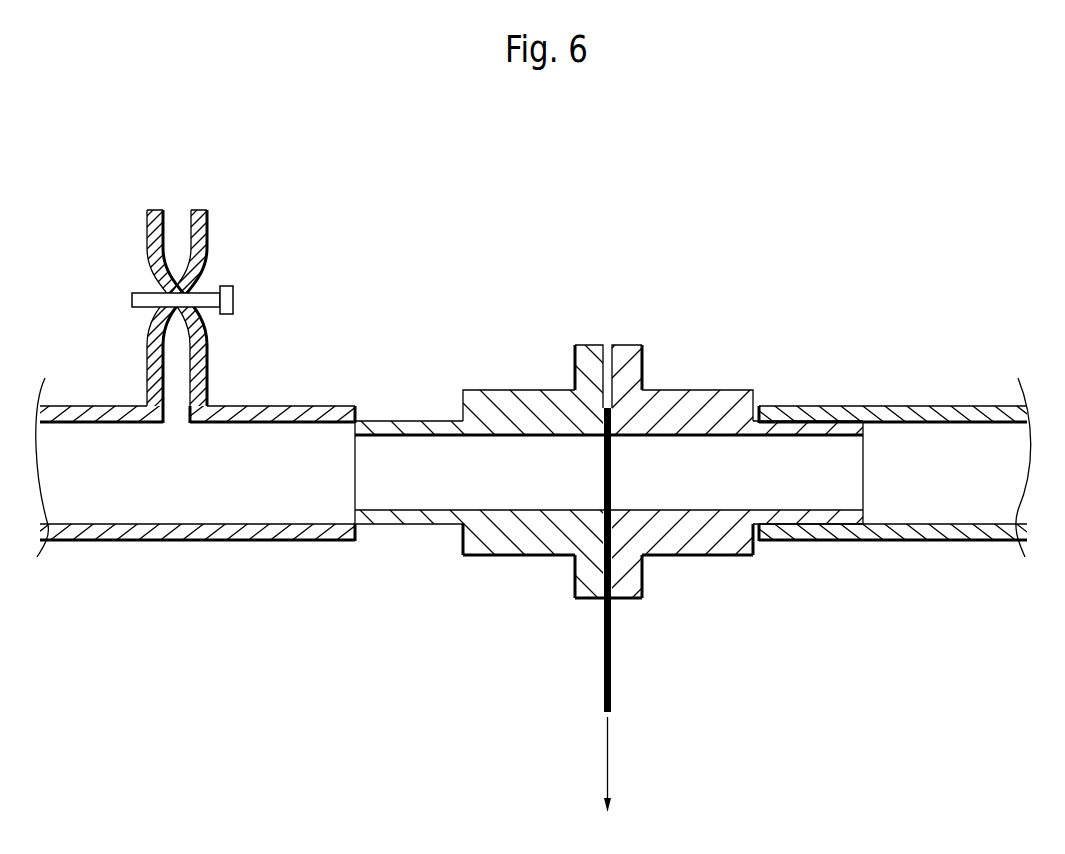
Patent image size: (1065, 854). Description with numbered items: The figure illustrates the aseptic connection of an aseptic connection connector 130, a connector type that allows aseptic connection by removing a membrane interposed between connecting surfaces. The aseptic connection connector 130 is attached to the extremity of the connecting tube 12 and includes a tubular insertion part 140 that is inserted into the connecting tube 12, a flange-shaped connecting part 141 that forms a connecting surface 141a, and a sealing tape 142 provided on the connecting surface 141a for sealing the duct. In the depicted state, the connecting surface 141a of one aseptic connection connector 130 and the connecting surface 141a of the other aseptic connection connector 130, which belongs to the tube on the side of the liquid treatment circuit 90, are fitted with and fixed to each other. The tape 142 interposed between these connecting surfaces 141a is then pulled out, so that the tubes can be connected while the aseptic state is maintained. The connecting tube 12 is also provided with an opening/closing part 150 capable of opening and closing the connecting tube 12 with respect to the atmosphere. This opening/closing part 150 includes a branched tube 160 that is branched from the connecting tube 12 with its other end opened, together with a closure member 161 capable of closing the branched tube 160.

The connecting tube 12 is at (287, 406).
The liquid treatment circuit 90 is at (902, 396).
The aseptic connection connector 130 is at (510, 385).
The tubular insertion part 140 is at (398, 517).
The flange-shaped connecting part 141 is at (583, 600).
The connecting surface 141a is at (613, 361).
The sealing tape 142 is at (604, 657).
The opening/closing part 150 is at (211, 301).
The branched tube 160 is at (207, 250).
The closure member 161 is at (233, 298).